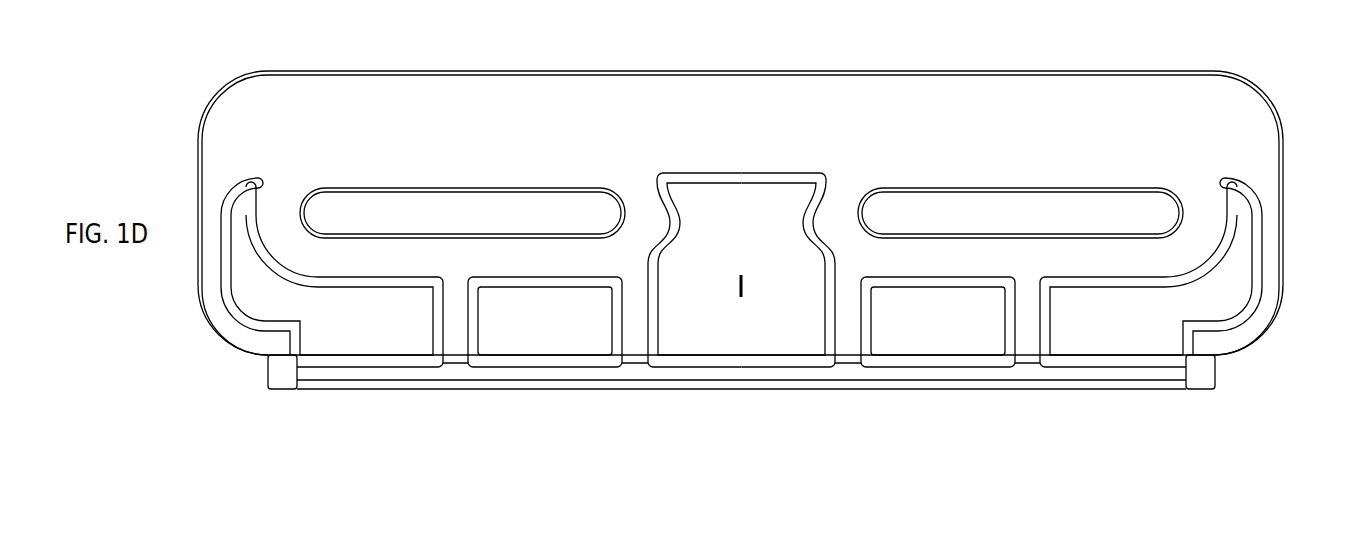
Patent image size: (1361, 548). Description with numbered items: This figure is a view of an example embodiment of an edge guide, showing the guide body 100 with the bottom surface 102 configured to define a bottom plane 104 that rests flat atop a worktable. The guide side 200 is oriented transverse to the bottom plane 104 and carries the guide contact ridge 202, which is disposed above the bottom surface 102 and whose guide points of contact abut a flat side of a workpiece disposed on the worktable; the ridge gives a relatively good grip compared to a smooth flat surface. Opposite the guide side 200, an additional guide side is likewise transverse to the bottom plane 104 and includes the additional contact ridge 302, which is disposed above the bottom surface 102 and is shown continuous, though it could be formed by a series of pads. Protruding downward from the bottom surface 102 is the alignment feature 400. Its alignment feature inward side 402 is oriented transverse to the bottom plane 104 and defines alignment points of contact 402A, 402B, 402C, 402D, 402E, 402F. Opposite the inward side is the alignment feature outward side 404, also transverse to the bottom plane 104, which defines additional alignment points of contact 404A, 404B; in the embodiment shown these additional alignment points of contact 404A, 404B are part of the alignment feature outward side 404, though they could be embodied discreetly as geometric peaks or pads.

The guide body 100 is at (168, 131).
The bottom surface 102 is at (403, 139).
The bottom plane 104 is at (453, 139).
The guide side 200 is at (393, 70).
The guide contact ridge 202 is at (740, 215).
The additional contact ridge 302 is at (528, 389).
The alignment feature 400 is at (453, 372).
The alignment feature inward side 402 is at (632, 352).
The alignment point of contact 402A is at (1203, 352).
The alignment point of contact 402B is at (1030, 352).
The alignment point of contact 402C is at (847, 352).
The alignment point of contact 402D is at (741, 270).
The alignment point of contact 402E is at (453, 352).
The alignment point of contact 402F is at (282, 352).
The alignment feature outward side 404 is at (797, 390).
The additional alignment point of contact 404A is at (1158, 392).
The additional alignment point of contact 404B is at (316, 389).